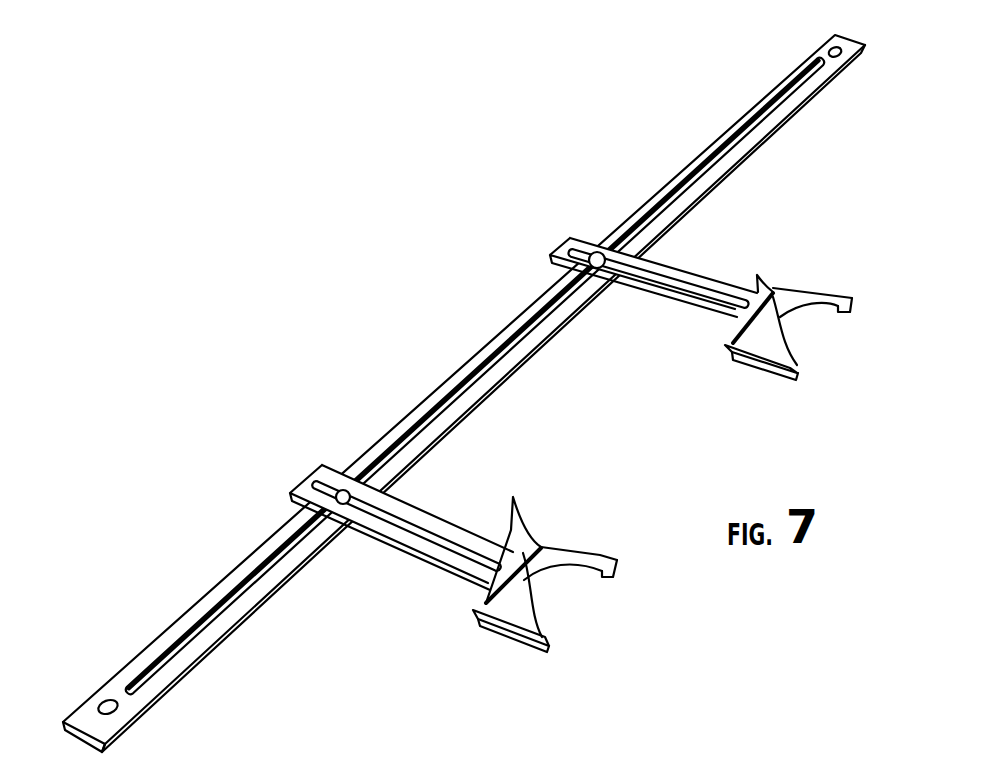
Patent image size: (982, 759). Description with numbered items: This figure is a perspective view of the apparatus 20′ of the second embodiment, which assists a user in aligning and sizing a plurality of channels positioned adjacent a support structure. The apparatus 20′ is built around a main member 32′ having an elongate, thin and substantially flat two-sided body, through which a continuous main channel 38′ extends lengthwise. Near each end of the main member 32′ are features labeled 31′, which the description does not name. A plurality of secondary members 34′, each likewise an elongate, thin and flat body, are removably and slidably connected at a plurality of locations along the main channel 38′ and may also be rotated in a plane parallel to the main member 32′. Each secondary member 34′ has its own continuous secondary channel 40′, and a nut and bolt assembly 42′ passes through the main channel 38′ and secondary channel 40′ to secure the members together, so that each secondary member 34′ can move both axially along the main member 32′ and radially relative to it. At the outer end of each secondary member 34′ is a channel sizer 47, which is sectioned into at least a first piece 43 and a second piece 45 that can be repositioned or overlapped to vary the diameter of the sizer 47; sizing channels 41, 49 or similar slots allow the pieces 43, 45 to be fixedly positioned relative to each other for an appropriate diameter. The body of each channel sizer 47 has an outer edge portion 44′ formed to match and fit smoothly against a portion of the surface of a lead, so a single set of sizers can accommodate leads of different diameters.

The apparatus 20′ is at (205, 470).
The mounting hole 31′ is at (100, 704).
The main member 32′ is at (124, 739).
The main channel 38′ is at (190, 640).
The secondary member 34′ is at (405, 510).
The secondary channel 40′ is at (395, 525).
The nut and bolt assembly 42′ is at (344, 490).
The sectioned piece of channel sizer 43 is at (514, 505).
The sizing channel 49 is at (472, 603).
The sectioned piece of channel sizer 45 is at (518, 638).
The sizing channel 41 is at (545, 535).
The channel sizer 47 is at (601, 560).
The outer edge portion 44′ is at (567, 575).